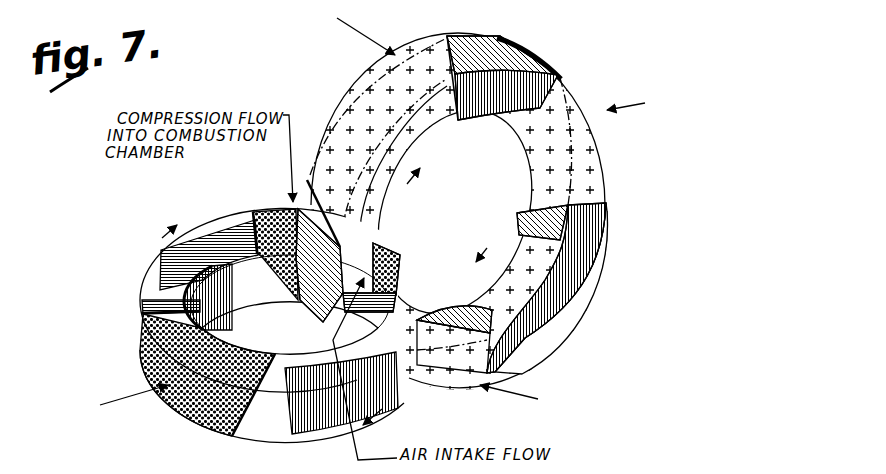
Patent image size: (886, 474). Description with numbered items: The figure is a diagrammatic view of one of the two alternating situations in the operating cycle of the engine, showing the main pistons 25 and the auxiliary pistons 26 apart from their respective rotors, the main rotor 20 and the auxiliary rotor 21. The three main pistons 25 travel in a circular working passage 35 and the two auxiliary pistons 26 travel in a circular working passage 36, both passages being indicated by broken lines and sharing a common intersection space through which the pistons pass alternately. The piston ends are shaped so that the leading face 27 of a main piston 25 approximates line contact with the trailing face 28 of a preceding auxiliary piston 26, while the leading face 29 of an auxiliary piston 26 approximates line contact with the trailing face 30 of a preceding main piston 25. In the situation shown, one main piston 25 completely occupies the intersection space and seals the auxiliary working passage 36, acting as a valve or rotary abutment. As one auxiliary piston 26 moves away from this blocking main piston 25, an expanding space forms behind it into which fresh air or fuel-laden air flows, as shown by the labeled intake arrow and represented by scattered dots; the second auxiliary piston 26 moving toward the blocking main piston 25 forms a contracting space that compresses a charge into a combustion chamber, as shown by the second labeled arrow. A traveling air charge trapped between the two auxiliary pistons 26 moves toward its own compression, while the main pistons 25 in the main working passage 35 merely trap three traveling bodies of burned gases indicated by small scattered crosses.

The main rotor 20 is at (602, 247).
The auxiliary rotor 21 is at (150, 312).
The main piston 25 is at (502, 38).
The auxiliary piston 26 is at (160, 271).
The leading face of main piston 27 is at (557, 80).
The trailing face of auxiliary piston 28 is at (152, 332).
The leading face of auxiliary piston 29 is at (260, 211).
The trailing face of main piston 30 is at (447, 40).
The main circular working passage 35 is at (346, 104).
The auxiliary circular working passage 36 is at (285, 211).